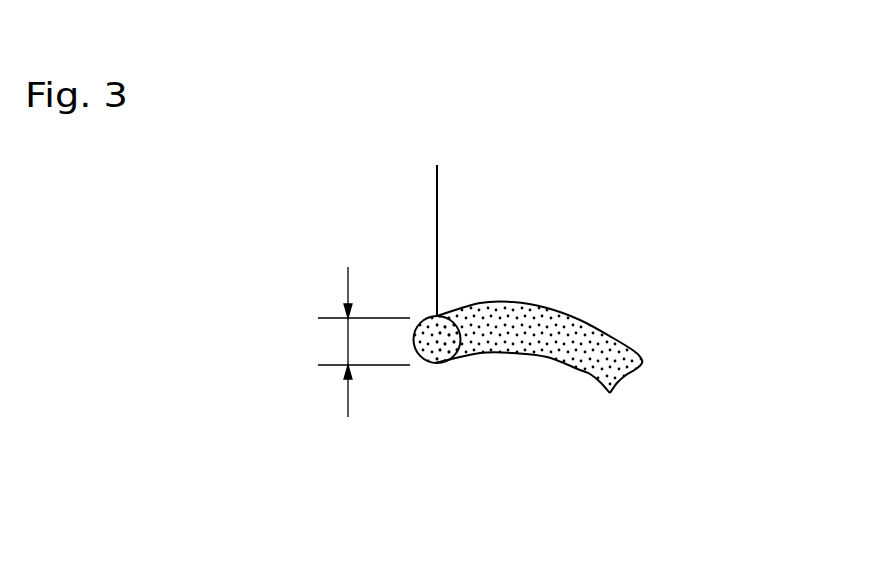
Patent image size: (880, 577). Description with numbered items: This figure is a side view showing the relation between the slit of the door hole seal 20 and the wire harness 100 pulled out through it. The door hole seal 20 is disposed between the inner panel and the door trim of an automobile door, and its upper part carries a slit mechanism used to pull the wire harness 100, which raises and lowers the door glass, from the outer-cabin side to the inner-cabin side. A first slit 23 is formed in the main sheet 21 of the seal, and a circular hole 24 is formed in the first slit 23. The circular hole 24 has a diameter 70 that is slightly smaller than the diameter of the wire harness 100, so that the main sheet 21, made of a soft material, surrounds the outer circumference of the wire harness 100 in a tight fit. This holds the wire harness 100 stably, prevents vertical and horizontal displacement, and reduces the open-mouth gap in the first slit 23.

The door hole seal 20 is at (633, 232).
The main sheet 21 is at (617, 207).
The first slit 23 is at (437, 215).
The circular hole 24 is at (417, 365).
The diameter 70 is at (356, 342).
The wire harness 100 is at (555, 320).